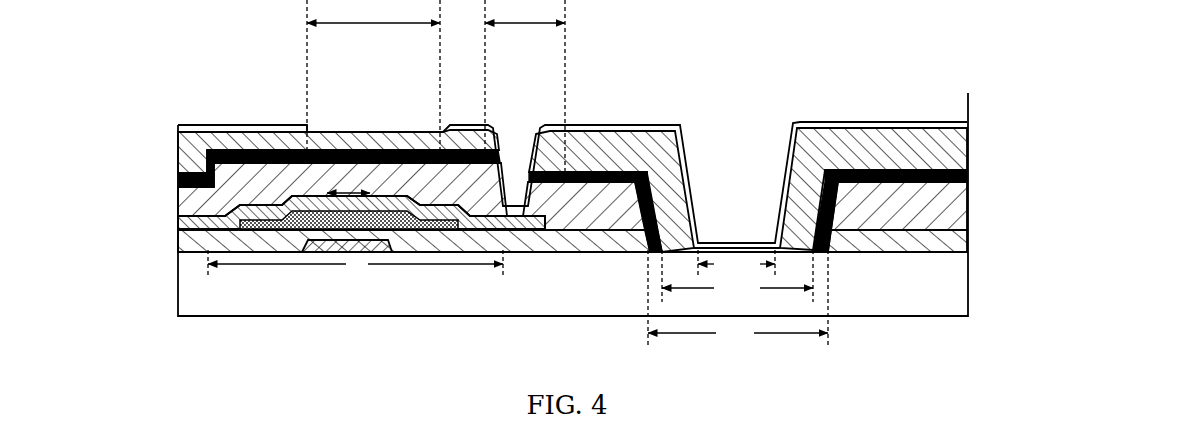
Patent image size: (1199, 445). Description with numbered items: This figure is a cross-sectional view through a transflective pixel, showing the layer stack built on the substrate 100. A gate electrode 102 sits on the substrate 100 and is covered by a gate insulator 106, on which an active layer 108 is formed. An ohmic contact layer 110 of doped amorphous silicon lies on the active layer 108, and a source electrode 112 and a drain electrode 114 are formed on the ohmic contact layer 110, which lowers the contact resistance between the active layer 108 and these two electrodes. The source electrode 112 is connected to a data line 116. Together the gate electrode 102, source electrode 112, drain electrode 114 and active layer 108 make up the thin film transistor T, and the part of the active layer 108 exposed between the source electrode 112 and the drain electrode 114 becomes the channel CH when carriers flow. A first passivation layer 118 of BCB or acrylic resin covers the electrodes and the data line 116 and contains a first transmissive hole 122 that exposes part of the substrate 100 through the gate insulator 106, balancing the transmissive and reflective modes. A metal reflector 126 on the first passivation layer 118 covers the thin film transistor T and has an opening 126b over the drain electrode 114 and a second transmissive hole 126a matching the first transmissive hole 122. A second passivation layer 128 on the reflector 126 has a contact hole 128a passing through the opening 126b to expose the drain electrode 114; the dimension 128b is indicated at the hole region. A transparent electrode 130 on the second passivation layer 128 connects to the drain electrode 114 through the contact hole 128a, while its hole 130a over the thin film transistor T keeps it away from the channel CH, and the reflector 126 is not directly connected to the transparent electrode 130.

The substrate 100 is at (504, 303).
The gate electrode 102 is at (322, 252).
The gate insulator 106 is at (249, 250).
The active layer 108 is at (437, 222).
The ohmic contact layer 110 is at (283, 197).
The source electrode 112 is at (258, 204).
The drain electrode 114 is at (422, 197).
The data line 116 is at (192, 133).
The first passivation layer 118 is at (457, 133).
The first transmissive hole 122 is at (738, 297).
The reflector 126 is at (295, 150).
The second transmissive hole 126a is at (737, 276).
The opening 126b is at (525, 91).
The second passivation layer 128 is at (343, 145).
The contact hole 128a is at (517, 140).
The width of hole bottom 128b is at (736, 262).
The transparent electrode 130 is at (683, 163).
The hole 130a is at (373, 80).
The channel CH is at (348, 183).
The thin film transistor T is at (355, 264).